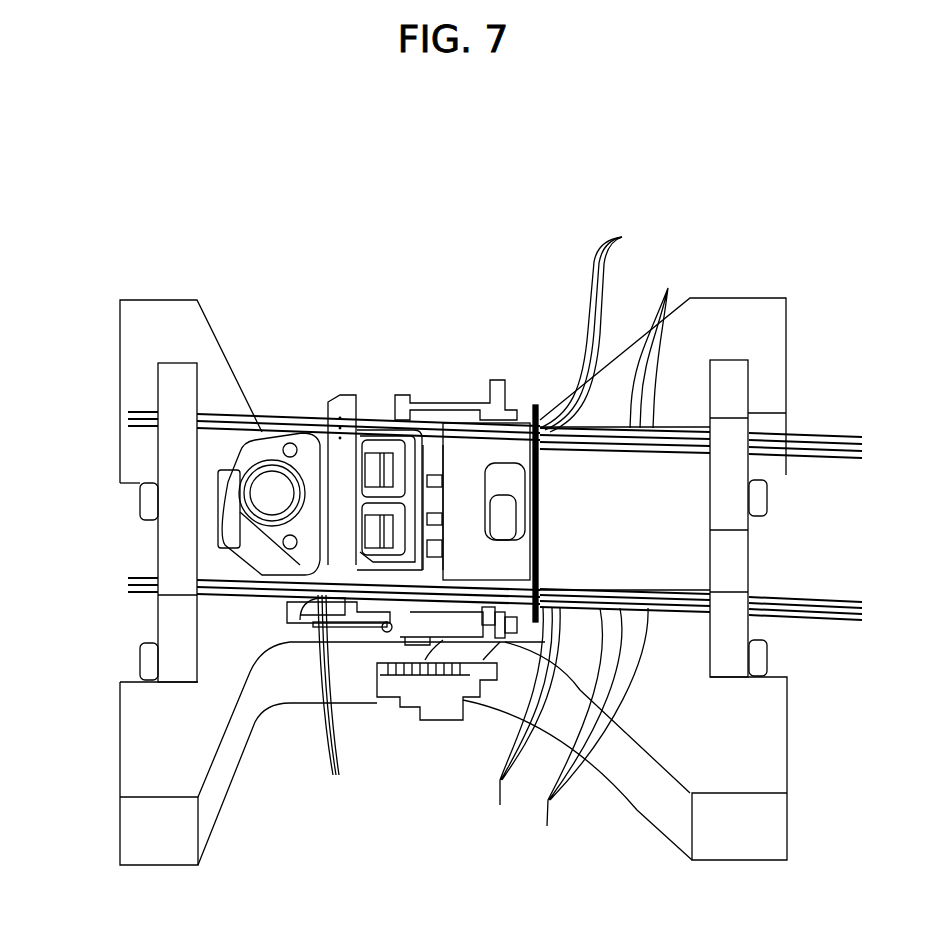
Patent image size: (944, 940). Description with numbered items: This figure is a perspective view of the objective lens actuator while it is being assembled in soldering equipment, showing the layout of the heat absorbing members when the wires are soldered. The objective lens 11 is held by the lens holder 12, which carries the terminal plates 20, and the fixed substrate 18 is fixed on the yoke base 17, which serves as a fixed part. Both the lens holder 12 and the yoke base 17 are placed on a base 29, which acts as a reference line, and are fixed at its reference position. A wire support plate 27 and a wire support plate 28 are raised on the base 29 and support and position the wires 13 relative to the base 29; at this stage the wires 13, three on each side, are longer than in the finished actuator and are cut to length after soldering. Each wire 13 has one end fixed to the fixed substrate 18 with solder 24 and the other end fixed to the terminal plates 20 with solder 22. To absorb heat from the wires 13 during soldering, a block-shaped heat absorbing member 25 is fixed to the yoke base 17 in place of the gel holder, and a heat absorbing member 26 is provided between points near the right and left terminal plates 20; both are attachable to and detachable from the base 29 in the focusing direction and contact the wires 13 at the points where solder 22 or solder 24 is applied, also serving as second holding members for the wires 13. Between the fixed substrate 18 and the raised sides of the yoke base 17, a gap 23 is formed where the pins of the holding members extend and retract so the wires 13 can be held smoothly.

The objective lens 11 is at (272, 493).
The lens holder 12 is at (315, 417).
The wires 13 is at (607, 557).
The yoke base 17 is at (418, 395).
The fixed substrate 18 is at (540, 545).
The terminal plates 20 is at (300, 588).
The solder 22 is at (332, 699).
The gap 23 is at (527, 406).
The solder 24 is at (568, 529).
The heat absorbing member 25 is at (470, 443).
The heat absorbing member 26 is at (335, 395).
The wire support plate 27 is at (173, 465).
The wire support plate 28 is at (733, 473).
The base 29 is at (675, 813).